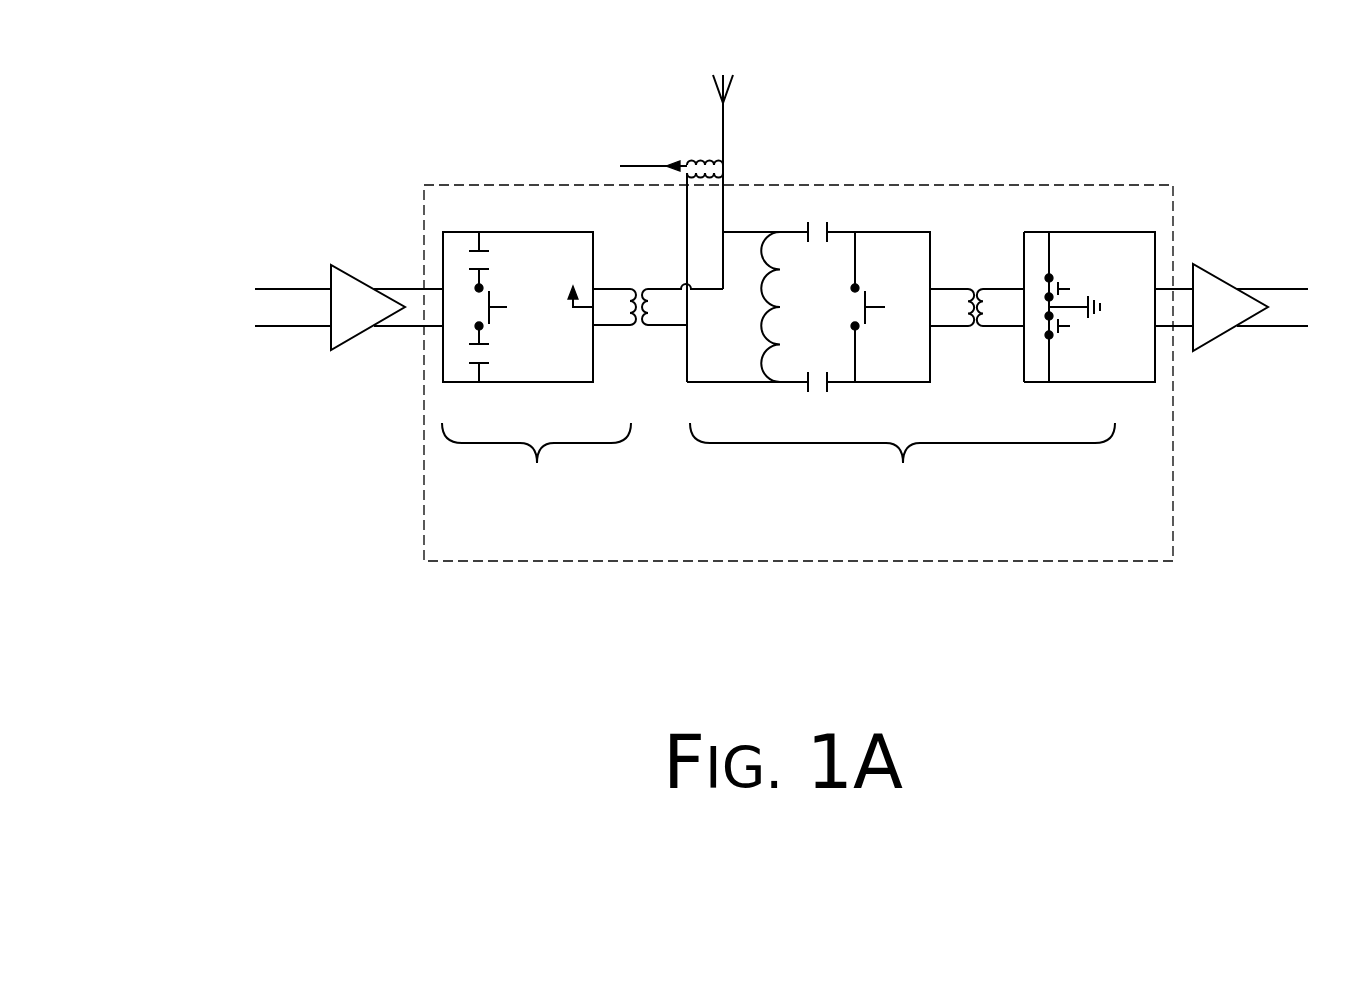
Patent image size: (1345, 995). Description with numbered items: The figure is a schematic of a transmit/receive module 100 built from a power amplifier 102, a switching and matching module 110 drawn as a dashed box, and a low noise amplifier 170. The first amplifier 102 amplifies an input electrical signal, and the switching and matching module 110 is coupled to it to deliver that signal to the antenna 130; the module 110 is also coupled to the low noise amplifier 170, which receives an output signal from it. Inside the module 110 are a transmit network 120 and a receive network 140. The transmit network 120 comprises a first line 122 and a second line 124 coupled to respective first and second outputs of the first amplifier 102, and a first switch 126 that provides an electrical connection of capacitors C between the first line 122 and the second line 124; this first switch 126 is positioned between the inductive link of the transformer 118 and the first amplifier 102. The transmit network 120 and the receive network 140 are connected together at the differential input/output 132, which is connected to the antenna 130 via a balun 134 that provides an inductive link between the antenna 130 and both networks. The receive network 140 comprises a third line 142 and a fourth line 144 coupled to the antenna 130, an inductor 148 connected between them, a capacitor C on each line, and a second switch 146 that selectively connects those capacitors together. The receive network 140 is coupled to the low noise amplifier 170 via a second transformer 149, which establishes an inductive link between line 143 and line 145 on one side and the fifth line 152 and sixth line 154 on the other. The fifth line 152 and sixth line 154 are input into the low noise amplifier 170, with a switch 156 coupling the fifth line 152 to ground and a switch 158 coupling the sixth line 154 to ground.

The transmit/receive module 100 is at (297, 70).
The power amplifier 102 is at (331, 265).
The switching and matching module 110 is at (1165, 550).
The transformer 118 is at (658, 328).
The transmit network 120 is at (523, 487).
The first line 122 is at (460, 232).
The second line 124 is at (455, 382).
The first switch 126 is at (534, 307).
The antenna 130 is at (723, 147).
The differential input/output 132 is at (686, 208).
The balun 134 is at (648, 165).
The receive network 140 is at (889, 487).
The third line 142 is at (750, 232).
The line 143 is at (873, 232).
The fourth line 144 is at (715, 382).
The line 145 is at (882, 382).
The second switch 146 is at (888, 307).
The inductor 148 is at (762, 335).
The second transformer 149 is at (977, 331).
The fifth line 152 is at (1033, 232).
The sixth line 154 is at (1033, 382).
The switch 156 is at (1078, 266).
The switch 158 is at (1078, 339).
The low noise amplifier 170 is at (1193, 264).